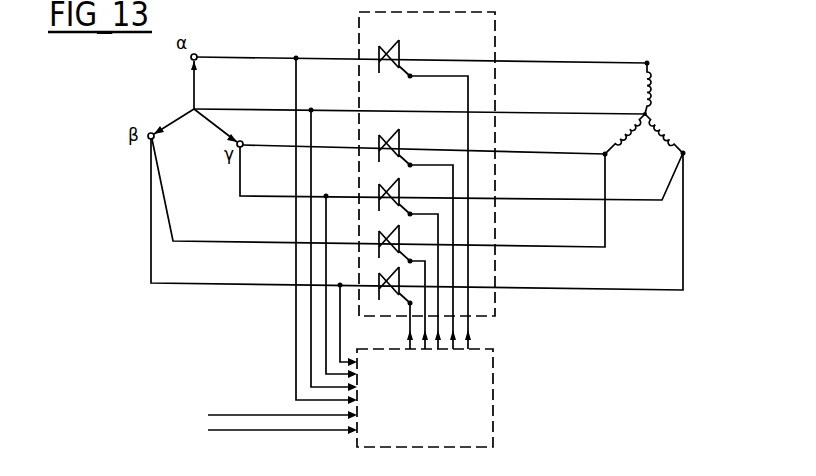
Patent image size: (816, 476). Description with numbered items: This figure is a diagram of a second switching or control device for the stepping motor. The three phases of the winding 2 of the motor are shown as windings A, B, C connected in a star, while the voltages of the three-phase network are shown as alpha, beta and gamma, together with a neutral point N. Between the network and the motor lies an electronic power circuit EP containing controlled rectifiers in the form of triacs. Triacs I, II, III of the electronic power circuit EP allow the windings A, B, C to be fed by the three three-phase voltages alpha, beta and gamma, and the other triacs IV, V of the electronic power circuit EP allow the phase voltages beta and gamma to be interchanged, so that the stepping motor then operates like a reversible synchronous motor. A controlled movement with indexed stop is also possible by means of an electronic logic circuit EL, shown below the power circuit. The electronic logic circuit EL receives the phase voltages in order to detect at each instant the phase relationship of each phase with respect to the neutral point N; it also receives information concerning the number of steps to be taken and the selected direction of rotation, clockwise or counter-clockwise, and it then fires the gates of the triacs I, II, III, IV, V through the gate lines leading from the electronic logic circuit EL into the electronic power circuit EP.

The winding 2 is at (663, 95).
The electronic power circuit EP is at (427, 180).
The electronic logic circuit EL is at (425, 398).
The winding phase A is at (657, 88).
The winding phase B is at (666, 135).
The winding phase C is at (626, 135).
The neutral point N is at (195, 101).
The triac I is at (396, 56).
The triac II is at (396, 285).
The triac III is at (397, 148).
The triac IV is at (398, 243).
The triac V is at (397, 196).